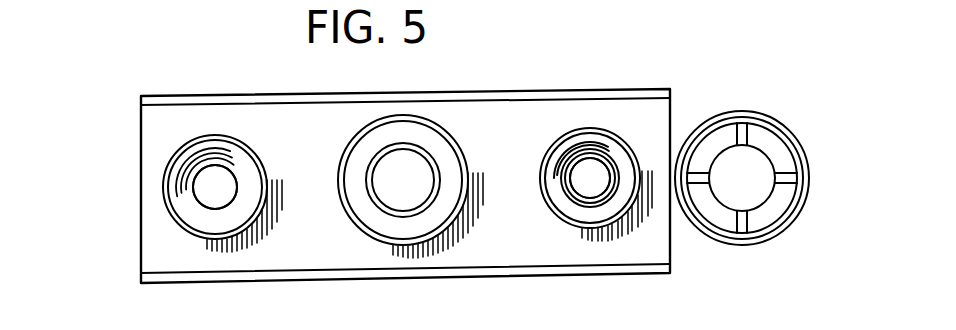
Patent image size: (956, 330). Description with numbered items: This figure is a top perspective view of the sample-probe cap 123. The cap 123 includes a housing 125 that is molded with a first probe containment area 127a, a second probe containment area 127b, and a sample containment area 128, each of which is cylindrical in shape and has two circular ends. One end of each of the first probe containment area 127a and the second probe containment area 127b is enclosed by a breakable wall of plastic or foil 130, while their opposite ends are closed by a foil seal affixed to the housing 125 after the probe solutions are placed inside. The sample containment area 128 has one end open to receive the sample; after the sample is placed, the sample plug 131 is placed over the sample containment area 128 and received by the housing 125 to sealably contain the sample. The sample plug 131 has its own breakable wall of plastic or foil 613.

The cap 123 is at (206, 288).
The housing 125 is at (650, 248).
The first probe containment area 127a is at (606, 174).
The second probe containment area 127b is at (216, 180).
The sample containment area 128 is at (402, 168).
The breakable wall of plastic or foil 130 is at (213, 193).
The sample plug 131 is at (768, 123).
The breakable wall of plastic or foil 613 is at (757, 189).